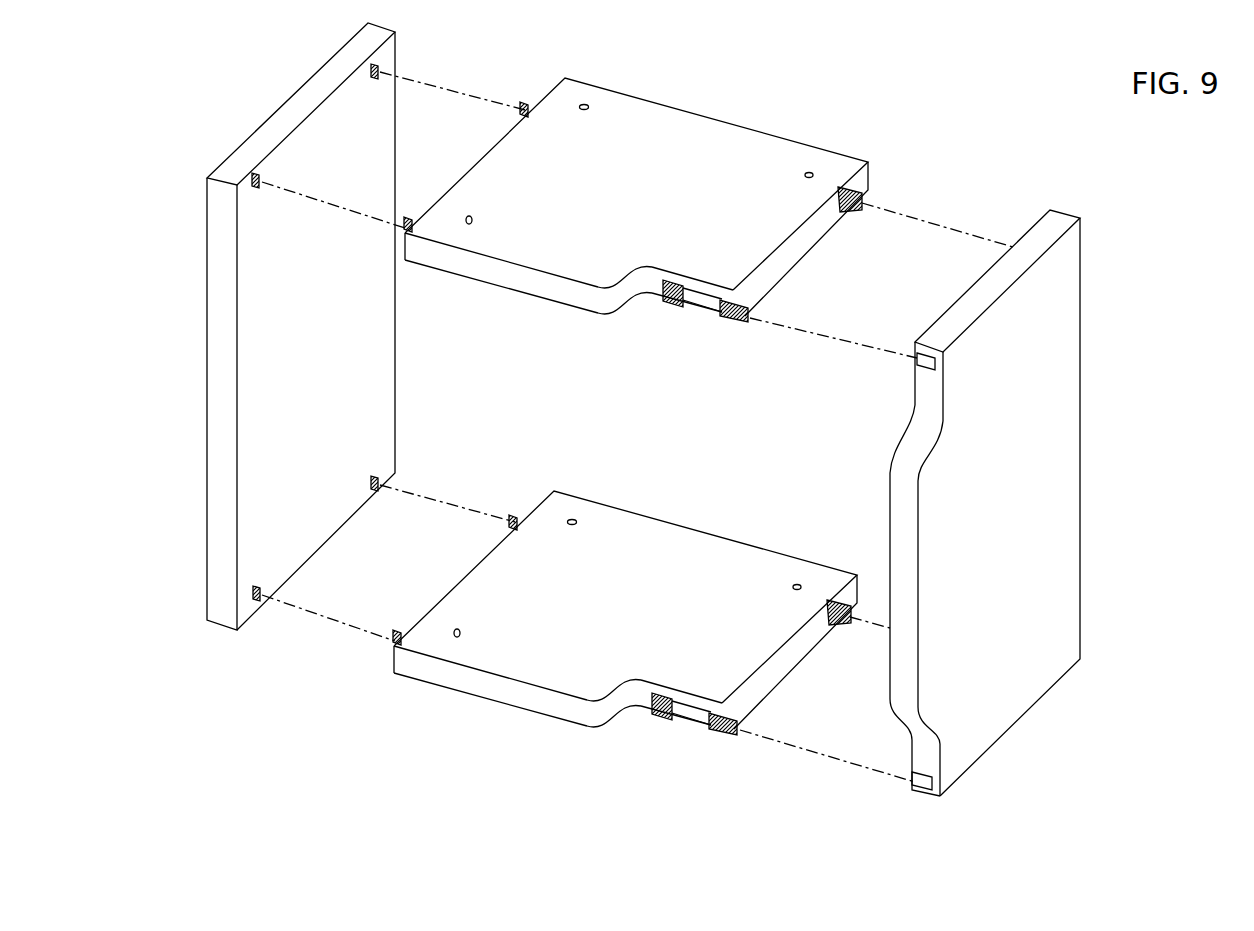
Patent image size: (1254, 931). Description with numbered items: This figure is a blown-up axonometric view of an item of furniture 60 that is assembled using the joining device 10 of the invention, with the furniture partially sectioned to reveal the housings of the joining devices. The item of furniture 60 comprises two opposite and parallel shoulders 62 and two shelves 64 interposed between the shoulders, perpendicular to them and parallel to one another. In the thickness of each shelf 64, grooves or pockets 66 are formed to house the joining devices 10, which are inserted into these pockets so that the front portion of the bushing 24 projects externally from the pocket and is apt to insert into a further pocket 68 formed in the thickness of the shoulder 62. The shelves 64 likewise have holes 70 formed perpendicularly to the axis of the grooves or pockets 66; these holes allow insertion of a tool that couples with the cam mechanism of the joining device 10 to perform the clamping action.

The joining device 10 is at (698, 322).
The bushing 24 is at (527, 106).
The item of furniture 60 is at (226, 679).
The shoulder 62 is at (290, 316).
The shelf 64 is at (674, 170).
The groove or pocket 66 is at (662, 300).
The further pocket 68 is at (380, 70).
The hole 70 is at (592, 104).